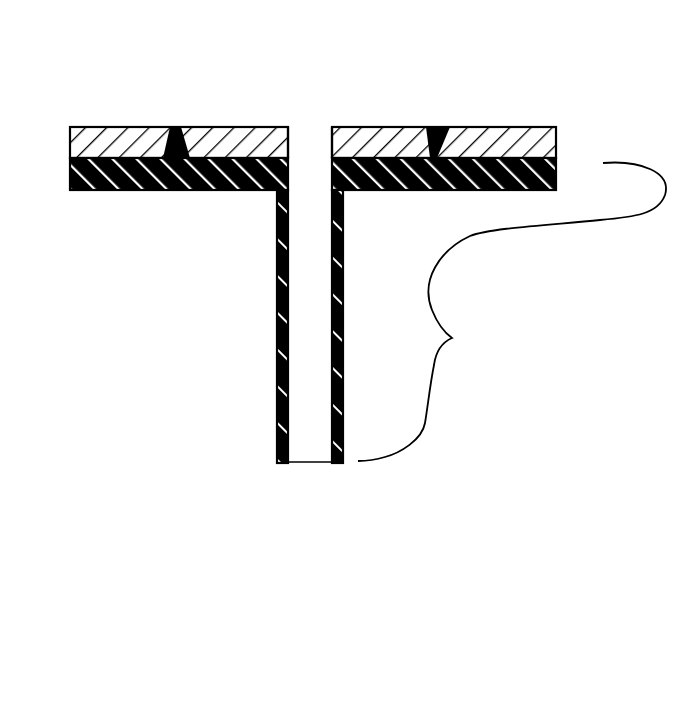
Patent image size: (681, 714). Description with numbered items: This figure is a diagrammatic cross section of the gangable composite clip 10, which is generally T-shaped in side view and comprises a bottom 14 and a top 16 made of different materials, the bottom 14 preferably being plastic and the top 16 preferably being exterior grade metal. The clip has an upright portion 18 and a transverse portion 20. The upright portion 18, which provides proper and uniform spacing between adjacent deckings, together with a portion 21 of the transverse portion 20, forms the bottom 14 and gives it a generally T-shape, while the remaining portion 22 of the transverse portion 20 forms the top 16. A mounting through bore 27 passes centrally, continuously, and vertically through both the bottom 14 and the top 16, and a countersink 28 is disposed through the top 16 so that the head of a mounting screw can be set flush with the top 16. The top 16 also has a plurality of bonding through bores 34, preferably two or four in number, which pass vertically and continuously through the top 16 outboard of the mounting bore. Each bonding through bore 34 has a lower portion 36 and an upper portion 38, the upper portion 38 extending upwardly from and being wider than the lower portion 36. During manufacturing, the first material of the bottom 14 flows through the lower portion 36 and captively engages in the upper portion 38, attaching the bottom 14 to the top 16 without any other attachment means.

The gangable composite clip 10 is at (126, 86).
The bottom 14 is at (458, 341).
The top 16 is at (559, 170).
The upright portion 18 is at (268, 200).
The transverse portion 20 is at (66, 128).
The portion of the transverse portion 21 is at (559, 160).
The remaining portion of the transverse portion 22 is at (313, 142).
The mounting through bore 27 is at (339, 255).
The countersink 28 is at (342, 152).
The bonding through bore 34 is at (188, 136).
The lower portion 36 is at (162, 152).
The upper portion 38 is at (188, 137).